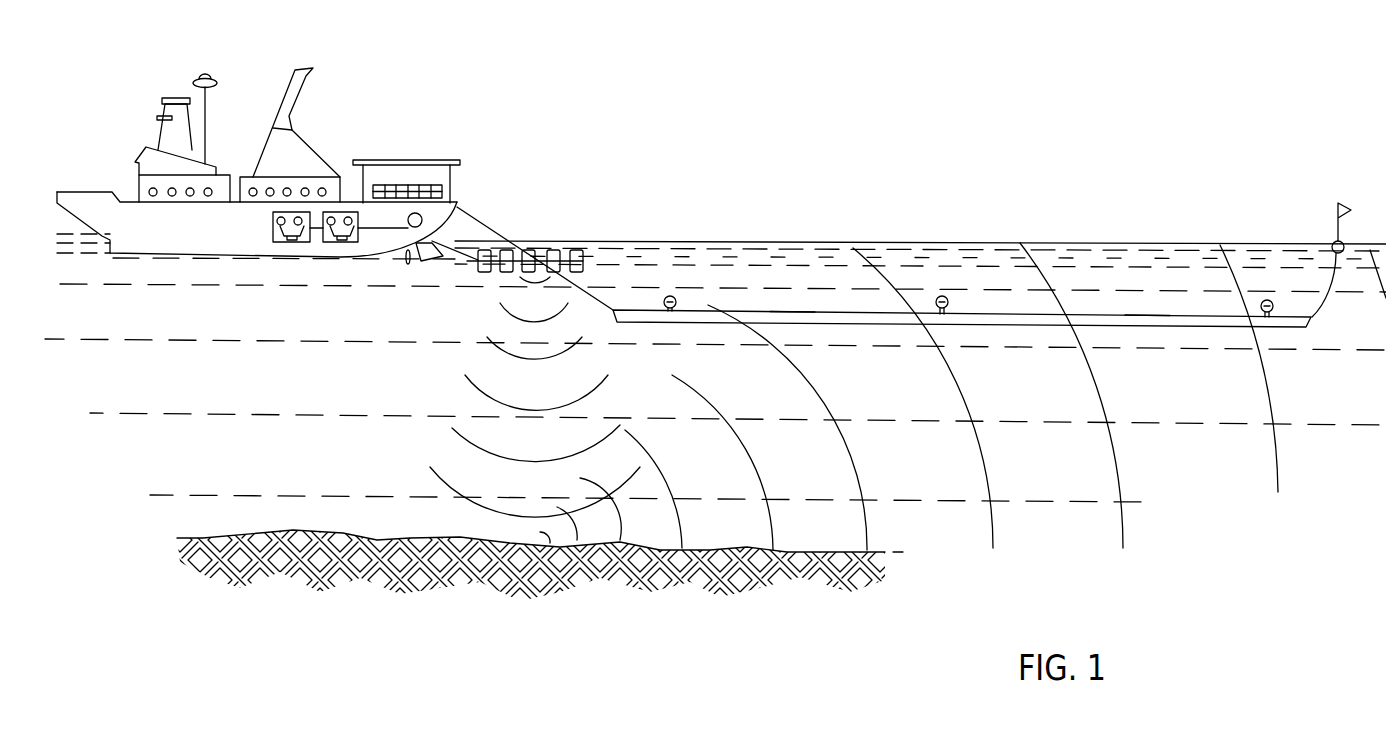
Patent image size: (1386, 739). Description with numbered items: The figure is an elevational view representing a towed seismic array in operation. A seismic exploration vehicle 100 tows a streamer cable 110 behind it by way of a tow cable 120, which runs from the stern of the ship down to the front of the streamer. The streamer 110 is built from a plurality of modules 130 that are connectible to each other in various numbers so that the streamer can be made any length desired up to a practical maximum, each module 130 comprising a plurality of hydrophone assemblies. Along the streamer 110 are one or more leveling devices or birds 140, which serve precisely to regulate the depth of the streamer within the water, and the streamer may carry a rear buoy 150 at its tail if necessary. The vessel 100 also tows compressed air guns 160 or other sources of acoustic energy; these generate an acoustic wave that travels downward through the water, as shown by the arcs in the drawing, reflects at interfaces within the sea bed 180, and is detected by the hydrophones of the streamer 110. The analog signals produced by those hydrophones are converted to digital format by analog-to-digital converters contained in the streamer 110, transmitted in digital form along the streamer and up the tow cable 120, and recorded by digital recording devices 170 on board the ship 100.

The seismic exploration vehicle 100 is at (258, 195).
The streamer cable 110 is at (1137, 326).
The tow cable 120 is at (600, 304).
The module 130 is at (792, 311).
The leveling device 140 is at (670, 296).
The rear buoy 150 is at (1332, 247).
The compressed air gun 160 is at (553, 250).
The digital recording device 170 is at (293, 213).
The sea bed 180 is at (410, 537).